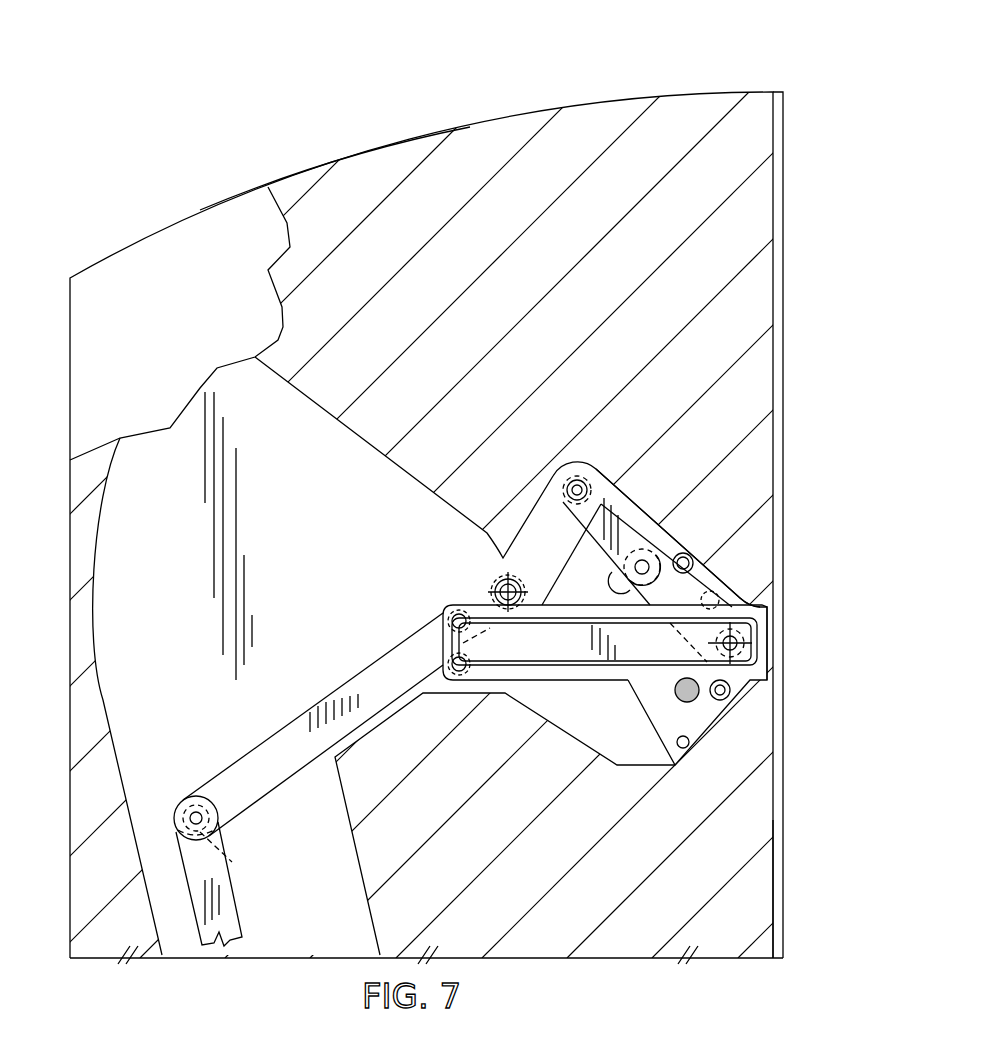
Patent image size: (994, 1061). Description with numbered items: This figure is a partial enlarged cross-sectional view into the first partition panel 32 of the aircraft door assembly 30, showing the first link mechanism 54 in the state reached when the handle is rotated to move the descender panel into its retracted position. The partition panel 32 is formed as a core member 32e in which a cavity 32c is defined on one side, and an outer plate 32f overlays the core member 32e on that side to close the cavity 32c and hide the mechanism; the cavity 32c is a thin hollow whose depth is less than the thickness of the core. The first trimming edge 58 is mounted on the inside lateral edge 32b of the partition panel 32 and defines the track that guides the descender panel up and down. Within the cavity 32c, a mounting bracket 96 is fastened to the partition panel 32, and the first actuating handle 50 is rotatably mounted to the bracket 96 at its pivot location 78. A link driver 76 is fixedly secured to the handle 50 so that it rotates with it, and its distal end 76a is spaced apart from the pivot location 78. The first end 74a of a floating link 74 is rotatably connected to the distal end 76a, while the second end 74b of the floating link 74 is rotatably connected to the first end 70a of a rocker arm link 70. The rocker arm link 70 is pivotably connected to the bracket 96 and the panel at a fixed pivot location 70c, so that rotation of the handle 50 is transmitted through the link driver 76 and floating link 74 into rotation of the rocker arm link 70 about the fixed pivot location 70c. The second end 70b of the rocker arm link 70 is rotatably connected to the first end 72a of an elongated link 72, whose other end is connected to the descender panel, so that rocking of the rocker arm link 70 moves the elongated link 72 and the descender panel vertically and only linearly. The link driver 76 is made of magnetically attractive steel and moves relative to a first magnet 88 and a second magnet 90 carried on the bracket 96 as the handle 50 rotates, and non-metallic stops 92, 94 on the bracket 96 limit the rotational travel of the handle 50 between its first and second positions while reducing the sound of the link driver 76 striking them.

The aircraft door assembly 30 is at (648, 78).
The first partition panel 32 is at (455, 170).
The inside lateral edge 32b is at (766, 888).
The cavity 32c is at (322, 516).
The core member 32e is at (380, 155).
The outer plate 32f is at (150, 245).
The first actuating handle 50 is at (563, 650).
The first link mechanism 54 is at (200, 740).
The first trimming edge 58 is at (786, 940).
The rocker arm link 70 is at (375, 665).
The first end of rocker arm link 70a is at (553, 503).
The second end of rocker arm link 70b is at (225, 820).
The fixed pivot location 70c is at (502, 585).
The elongated link 72 is at (240, 915).
The first end of elongated link 72a is at (183, 838).
The floating link 74 is at (621, 512).
The first end of floating link 74a is at (690, 557).
The second end of floating link 74b is at (585, 482).
The link driver 76 is at (700, 584).
The distal end of link driver 76a is at (620, 582).
The pivot location of handle 78 is at (735, 642).
The first magnet 88 is at (604, 641).
The second magnet 90 is at (677, 693).
The first stop 92 is at (688, 558).
The second stop 94 is at (688, 745).
The mounting bracket 96 is at (713, 710).